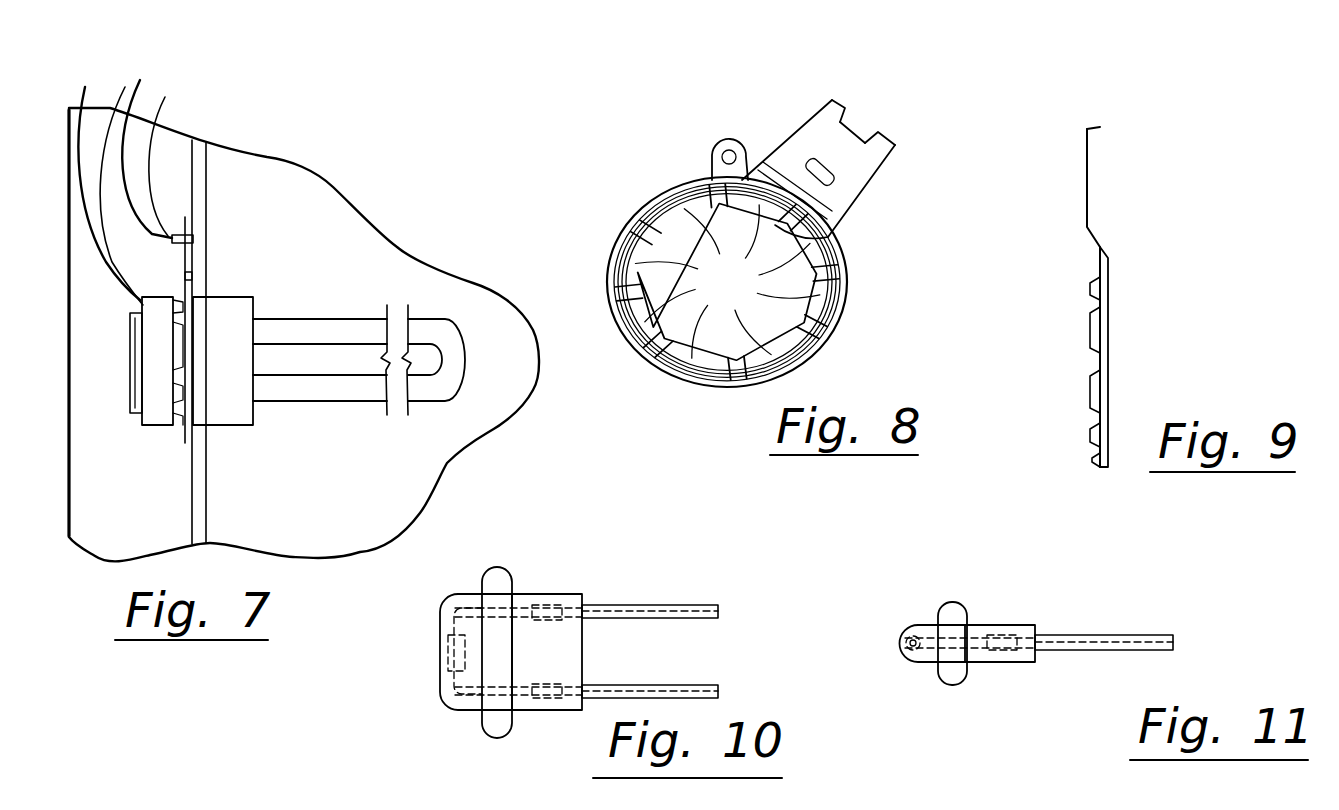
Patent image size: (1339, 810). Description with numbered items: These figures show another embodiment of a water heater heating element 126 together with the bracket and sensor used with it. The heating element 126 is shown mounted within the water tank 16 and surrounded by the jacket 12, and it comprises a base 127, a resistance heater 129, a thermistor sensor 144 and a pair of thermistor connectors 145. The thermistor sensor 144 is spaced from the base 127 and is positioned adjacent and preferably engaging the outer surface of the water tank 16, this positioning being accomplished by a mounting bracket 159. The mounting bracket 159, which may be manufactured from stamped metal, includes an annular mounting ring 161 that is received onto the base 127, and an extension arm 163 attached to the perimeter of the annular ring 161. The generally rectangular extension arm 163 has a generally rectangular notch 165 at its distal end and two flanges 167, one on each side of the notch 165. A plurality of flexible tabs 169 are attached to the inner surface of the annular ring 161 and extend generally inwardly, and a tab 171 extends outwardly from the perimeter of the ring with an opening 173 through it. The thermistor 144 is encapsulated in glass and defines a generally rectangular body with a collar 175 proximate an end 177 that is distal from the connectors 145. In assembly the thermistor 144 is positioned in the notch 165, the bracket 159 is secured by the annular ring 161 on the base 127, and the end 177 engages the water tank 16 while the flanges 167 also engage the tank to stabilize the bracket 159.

In FIG. 7, the jacket 12 is at (68, 397).
In FIG. 7, the water tank 16 is at (207, 193).
In FIG. 7, the heating element 126 is at (233, 440).
In FIG. 7, the base 127 is at (157, 413).
In FIG. 7, the resistance heater 129 is at (347, 327).
In FIG. 7, the thermistor sensor 144 is at (173, 233).
In FIG. 10, the thermistor sensor 144 is at (592, 612).
In FIG. 11, the thermistor sensor 144 is at (1036, 661).
In FIG. 7, the thermistor connectors 145 is at (158, 232).
In FIG. 10, the thermistor connectors 145 is at (705, 683).
In FIG. 7, the mounting bracket 159 is at (195, 262).
In FIG. 8, the mounting bracket 159 is at (862, 267).
In FIG. 9, the mounting bracket 159 is at (1122, 240).
In FIG. 8, the annular mounting ring 161 is at (818, 333).
In FIG. 9, the annular mounting ring 161 is at (1110, 330).
In FIG. 8, the extension arm 163 is at (876, 170).
In FIG. 9, the extension arm 163 is at (1104, 177).
In FIG. 8, the notch 165 is at (850, 127).
In FIG. 8, the flanges 167 is at (838, 102).
In FIG. 9, the flanges 167 is at (1093, 125).
In FIG. 8, the flexible tabs 169 is at (727, 282).
In FIG. 8, the tab 171 is at (724, 143).
In FIG. 8, the opening 173 is at (722, 156).
In FIG. 10, the opening 173 is at (552, 594).
In FIG. 11, the opening 173 is at (1030, 625).
In FIG. 10, the collar 175 is at (515, 540).
In FIG. 11, the collar 175 is at (950, 605).
In FIG. 10, the end 177 is at (440, 653).